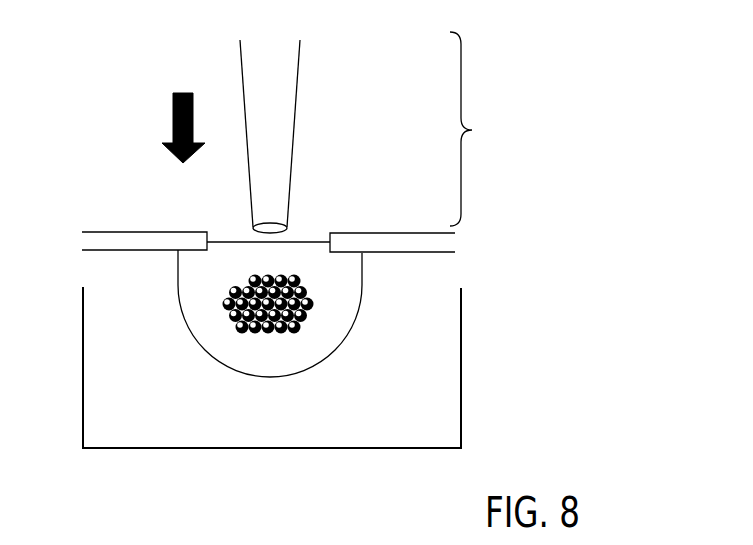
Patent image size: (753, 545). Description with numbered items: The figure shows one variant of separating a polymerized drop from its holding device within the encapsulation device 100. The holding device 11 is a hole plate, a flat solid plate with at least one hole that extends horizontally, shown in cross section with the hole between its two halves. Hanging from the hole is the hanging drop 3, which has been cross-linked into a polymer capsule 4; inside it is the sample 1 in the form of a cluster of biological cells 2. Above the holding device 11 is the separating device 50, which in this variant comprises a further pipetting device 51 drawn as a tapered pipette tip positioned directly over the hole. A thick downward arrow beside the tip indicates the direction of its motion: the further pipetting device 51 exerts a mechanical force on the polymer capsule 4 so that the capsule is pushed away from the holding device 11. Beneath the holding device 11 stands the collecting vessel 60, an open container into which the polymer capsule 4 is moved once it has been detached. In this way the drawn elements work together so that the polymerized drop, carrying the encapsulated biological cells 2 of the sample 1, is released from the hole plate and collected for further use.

The sample 1 is at (233, 315).
The biological cells 2 is at (268, 304).
The hanging drop 3 is at (355, 318).
The polymer capsule 4 is at (270, 313).
The holding device 11 is at (148, 242).
The separating device 50 is at (512, 141).
The further pipetting device 51 is at (285, 117).
The collecting vessel 60 is at (461, 367).
The encapsulation device 100 is at (588, 98).